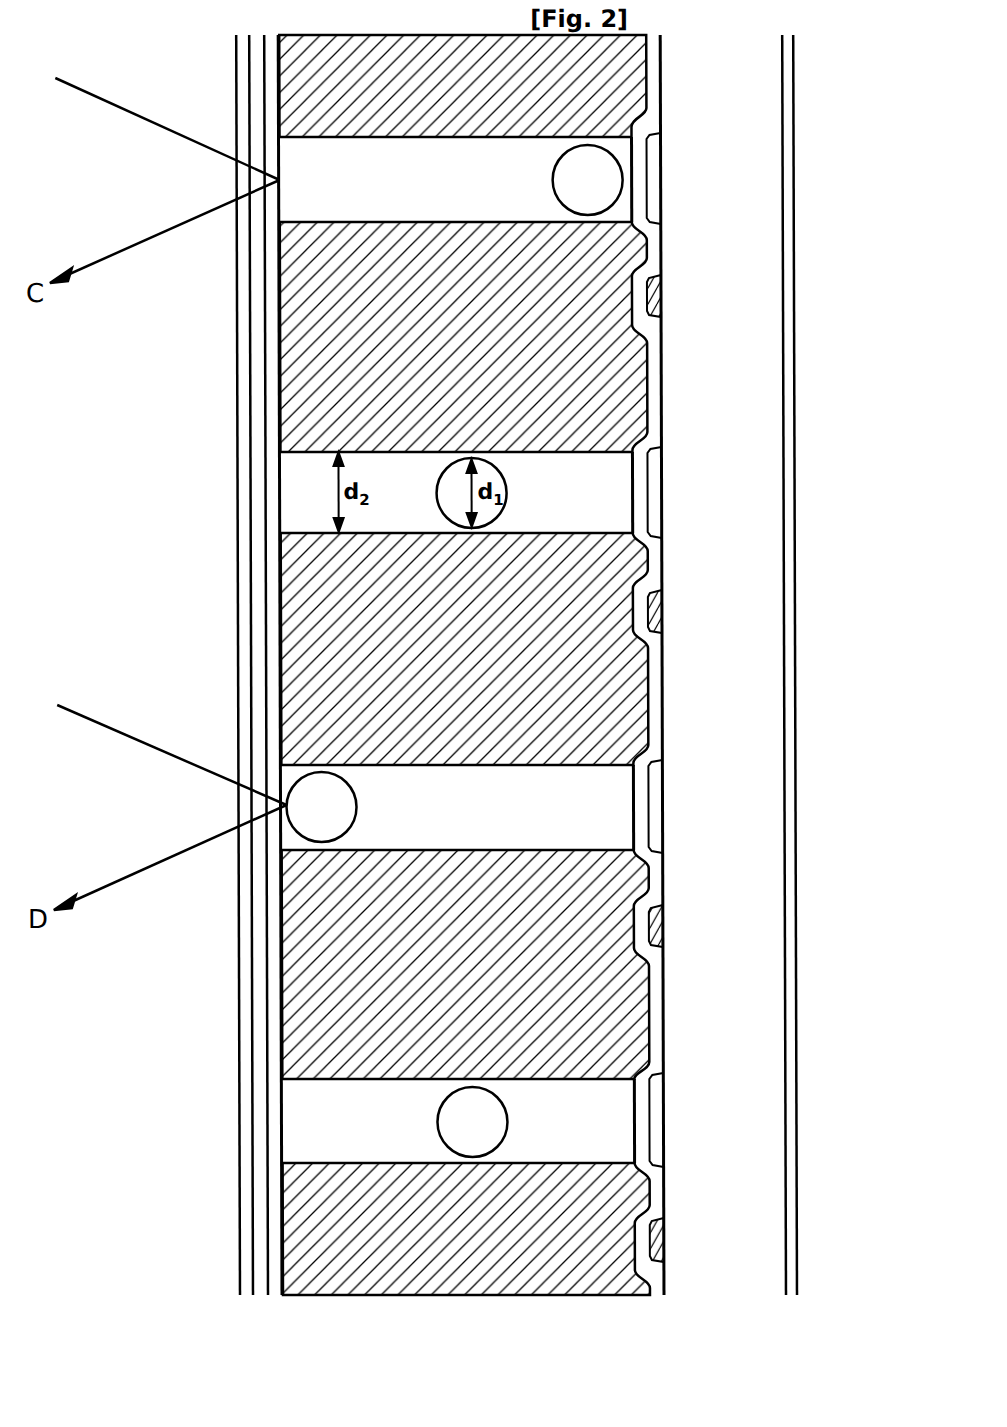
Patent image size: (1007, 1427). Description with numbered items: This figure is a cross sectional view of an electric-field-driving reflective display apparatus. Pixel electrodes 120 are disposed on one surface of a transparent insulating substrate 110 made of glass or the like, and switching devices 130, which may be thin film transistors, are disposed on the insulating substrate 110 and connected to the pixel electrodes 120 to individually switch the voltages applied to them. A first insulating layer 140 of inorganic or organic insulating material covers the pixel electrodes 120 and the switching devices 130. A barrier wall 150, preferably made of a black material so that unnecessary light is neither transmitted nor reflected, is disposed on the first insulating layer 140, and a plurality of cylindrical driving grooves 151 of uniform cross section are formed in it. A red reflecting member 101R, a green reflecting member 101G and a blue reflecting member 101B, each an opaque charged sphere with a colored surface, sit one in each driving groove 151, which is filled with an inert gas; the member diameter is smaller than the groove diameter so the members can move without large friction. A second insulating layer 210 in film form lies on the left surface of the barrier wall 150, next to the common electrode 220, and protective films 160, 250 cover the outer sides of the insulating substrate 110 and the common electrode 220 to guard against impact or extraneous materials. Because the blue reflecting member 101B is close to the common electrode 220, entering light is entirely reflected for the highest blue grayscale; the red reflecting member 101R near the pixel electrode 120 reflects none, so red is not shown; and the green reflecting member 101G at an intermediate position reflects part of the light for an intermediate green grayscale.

The red reflecting member 101R is at (615, 167).
The green reflecting member 101G is at (506, 486).
The blue reflecting member 101B is at (355, 803).
The insulating substrate 110 is at (770, 258).
The pixel electrode 120 is at (653, 200).
The switching device 130 is at (655, 296).
The first insulating layer 140 is at (661, 405).
The barrier wall 150 is at (620, 372).
The driving groove 151 is at (598, 765).
The protective film 160 is at (795, 577).
The second insulating layer 210 is at (272, 326).
The common electrode 220 is at (250, 364).
The protective film 250 is at (243, 420).